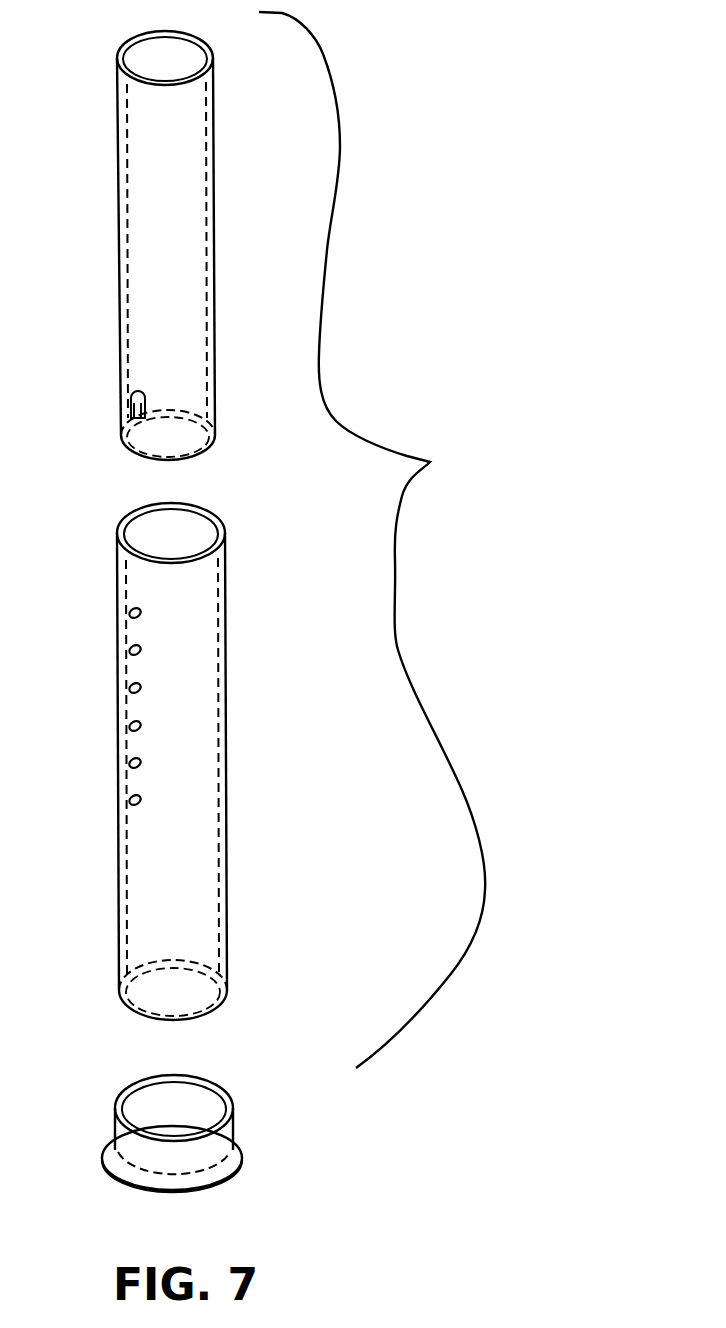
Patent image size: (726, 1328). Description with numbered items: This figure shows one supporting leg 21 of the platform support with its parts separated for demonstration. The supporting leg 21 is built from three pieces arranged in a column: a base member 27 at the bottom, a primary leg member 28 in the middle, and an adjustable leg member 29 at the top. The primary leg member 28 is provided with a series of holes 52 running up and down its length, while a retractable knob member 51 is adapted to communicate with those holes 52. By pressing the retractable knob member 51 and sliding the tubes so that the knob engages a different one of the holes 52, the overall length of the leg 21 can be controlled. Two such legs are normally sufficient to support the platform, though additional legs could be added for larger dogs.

The supporting leg 21 is at (374, 540).
The base member 27 is at (243, 1156).
The primary leg member 28 is at (226, 688).
The adjustable leg member 29 is at (218, 239).
The retractable knob member 51 is at (131, 402).
The series of holes 52 is at (118, 812).